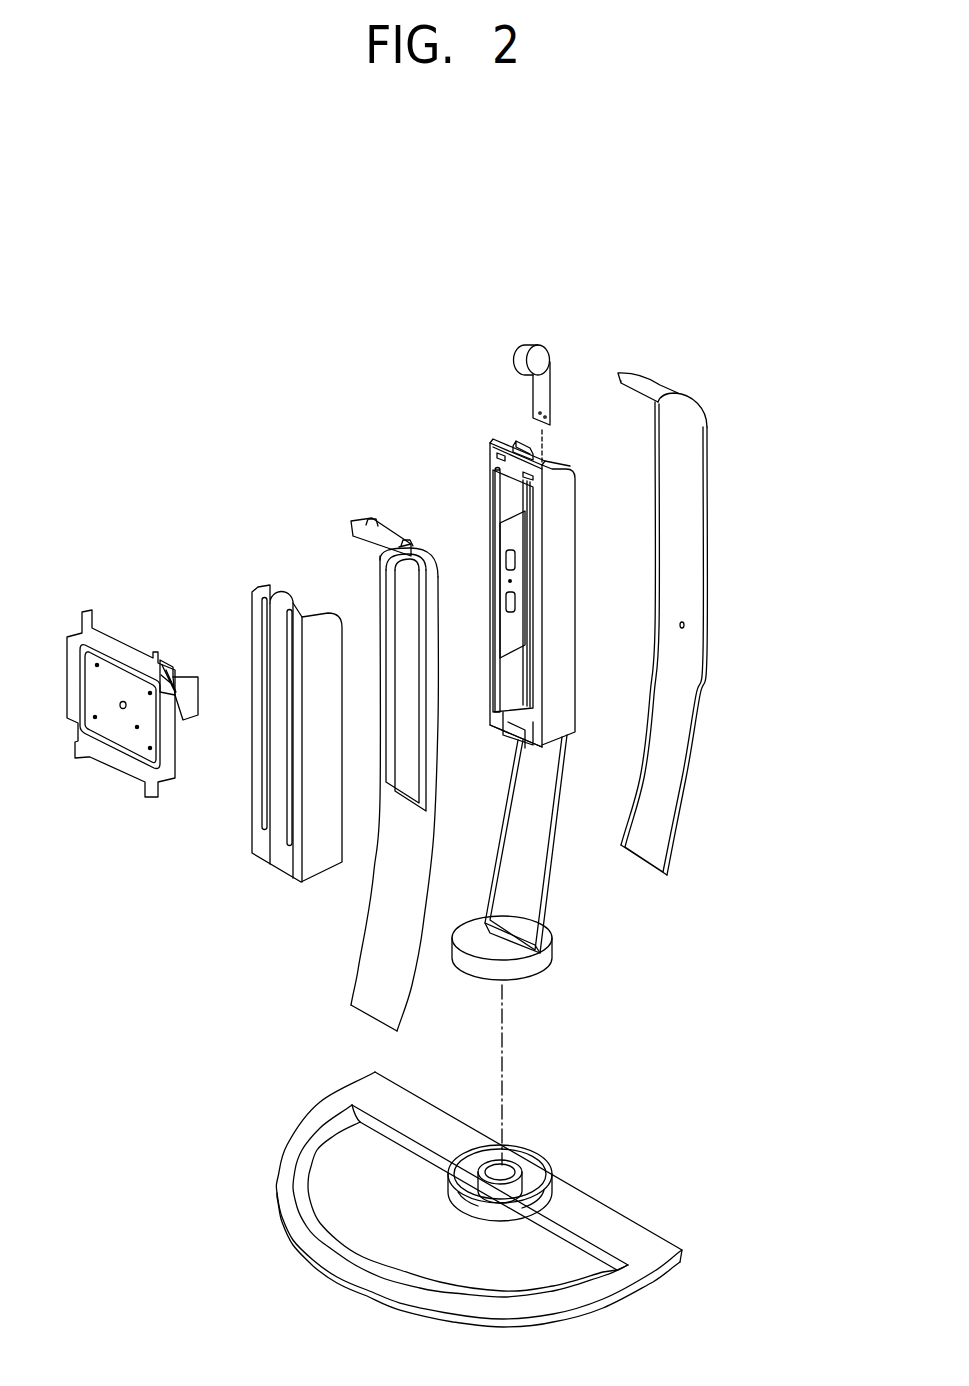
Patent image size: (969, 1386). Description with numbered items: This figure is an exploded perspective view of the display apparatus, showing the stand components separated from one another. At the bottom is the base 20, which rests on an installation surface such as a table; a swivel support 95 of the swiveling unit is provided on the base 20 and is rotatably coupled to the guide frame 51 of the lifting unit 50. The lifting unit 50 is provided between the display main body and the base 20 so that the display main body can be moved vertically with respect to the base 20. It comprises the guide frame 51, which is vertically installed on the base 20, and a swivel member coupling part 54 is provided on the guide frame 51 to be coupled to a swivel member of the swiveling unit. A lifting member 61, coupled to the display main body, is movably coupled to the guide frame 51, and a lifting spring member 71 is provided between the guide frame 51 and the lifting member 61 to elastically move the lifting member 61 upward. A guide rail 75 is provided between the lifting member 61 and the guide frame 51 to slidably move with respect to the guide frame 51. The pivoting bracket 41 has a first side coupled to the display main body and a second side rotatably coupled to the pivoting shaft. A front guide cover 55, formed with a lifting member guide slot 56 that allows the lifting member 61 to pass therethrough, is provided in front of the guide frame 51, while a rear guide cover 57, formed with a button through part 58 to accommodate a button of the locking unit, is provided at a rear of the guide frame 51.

The base 20 is at (622, 1220).
The pivoting bracket 41 is at (107, 635).
The lifting unit 50 is at (458, 423).
The guide frame 51 is at (555, 890).
The swivel member coupling part 54 is at (555, 962).
The front guide cover 55 is at (370, 935).
The lifting member guide slot 56 is at (285, 822).
The rear guide cover 57 is at (704, 624).
The button through part 58 is at (686, 625).
The lifting member 61 is at (188, 675).
The lifting spring member 71 is at (530, 343).
The guide rail 75 is at (523, 530).
The swivel support 95 is at (538, 1150).